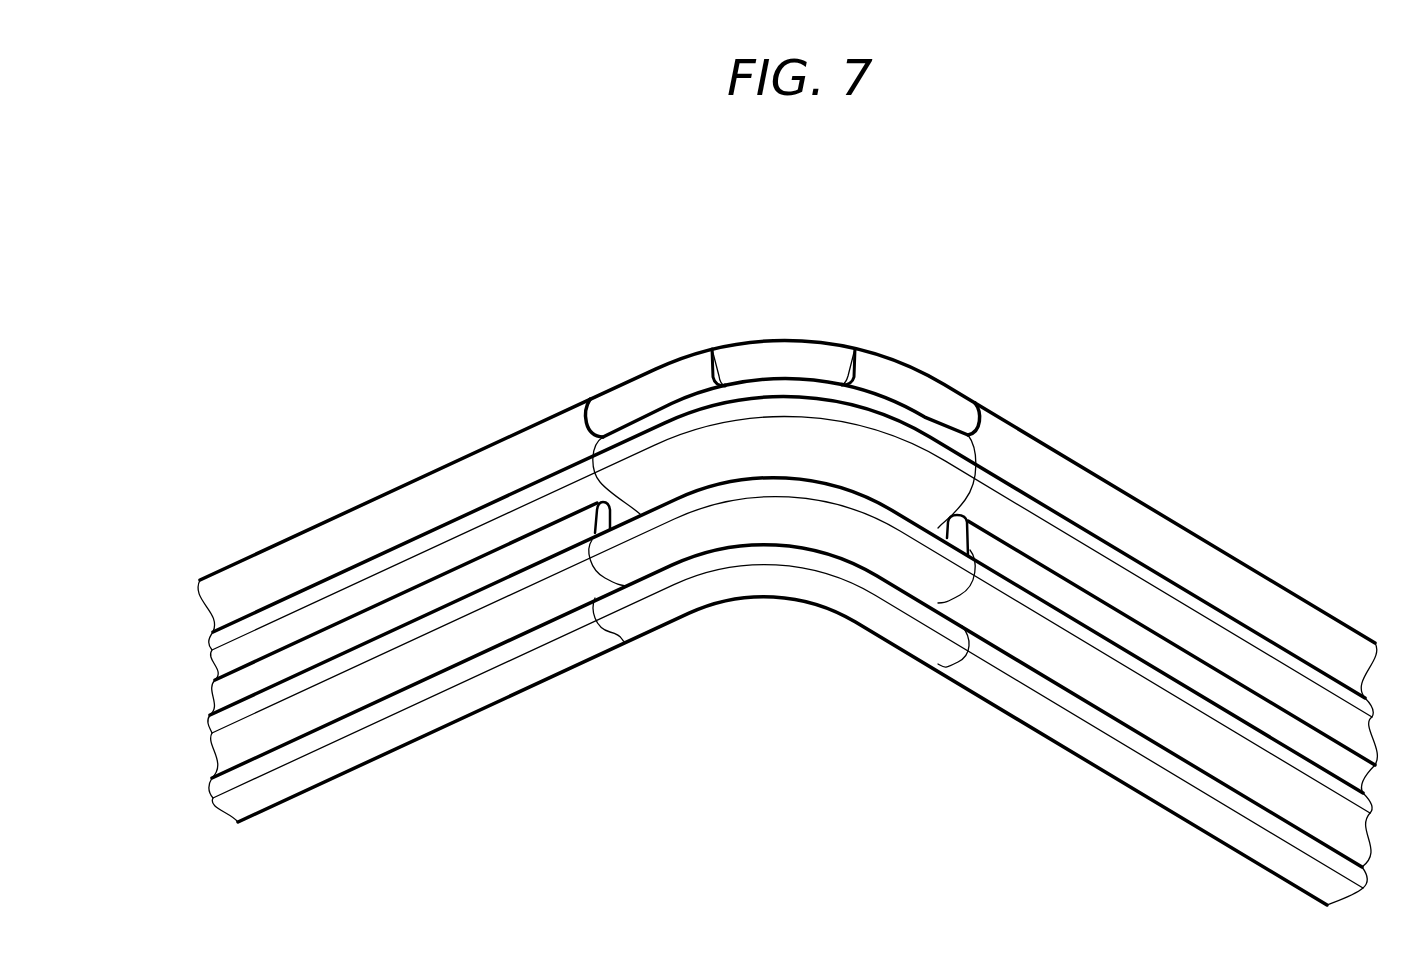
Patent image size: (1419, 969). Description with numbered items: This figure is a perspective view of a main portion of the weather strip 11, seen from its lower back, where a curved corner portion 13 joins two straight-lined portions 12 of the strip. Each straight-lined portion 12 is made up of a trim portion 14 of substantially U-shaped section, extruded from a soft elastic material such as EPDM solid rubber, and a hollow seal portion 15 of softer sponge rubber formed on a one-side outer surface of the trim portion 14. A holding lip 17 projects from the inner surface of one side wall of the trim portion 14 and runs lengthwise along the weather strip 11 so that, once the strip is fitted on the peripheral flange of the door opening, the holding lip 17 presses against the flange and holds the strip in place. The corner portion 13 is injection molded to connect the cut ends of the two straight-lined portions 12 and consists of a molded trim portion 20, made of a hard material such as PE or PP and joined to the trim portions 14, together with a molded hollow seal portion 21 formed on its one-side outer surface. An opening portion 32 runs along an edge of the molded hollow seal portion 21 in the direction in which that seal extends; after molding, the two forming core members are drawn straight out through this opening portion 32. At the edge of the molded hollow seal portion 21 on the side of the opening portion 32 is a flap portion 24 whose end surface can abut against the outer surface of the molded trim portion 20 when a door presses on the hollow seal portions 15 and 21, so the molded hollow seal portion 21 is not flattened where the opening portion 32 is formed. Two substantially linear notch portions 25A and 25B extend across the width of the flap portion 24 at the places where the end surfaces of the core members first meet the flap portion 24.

The weather strip 11 is at (784, 725).
The straight-lined portion 12 is at (787, 520).
The corner portion 13 is at (783, 294).
The trim portion 14 is at (222, 745).
The hollow seal portion 15 is at (342, 537).
The holding lip 17 is at (607, 512).
The molded trim portion 20 is at (755, 527).
The molded hollow seal portion 21 is at (946, 386).
The flap portion 24 is at (624, 400).
The notch portion 25A is at (865, 367).
The notch portion 25B is at (727, 372).
The opening portion 32 is at (778, 388).